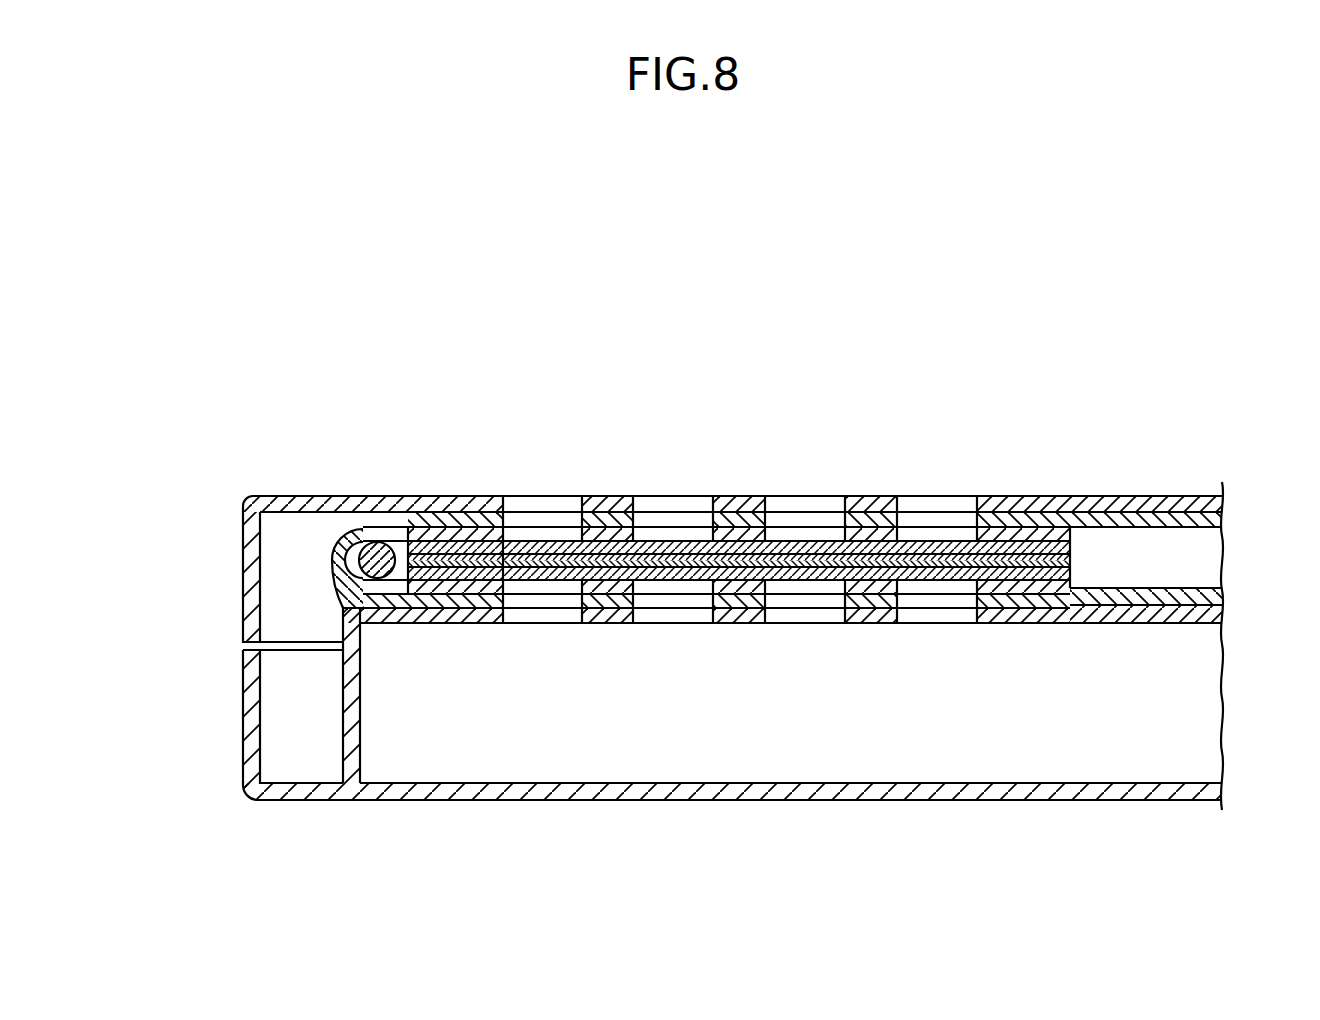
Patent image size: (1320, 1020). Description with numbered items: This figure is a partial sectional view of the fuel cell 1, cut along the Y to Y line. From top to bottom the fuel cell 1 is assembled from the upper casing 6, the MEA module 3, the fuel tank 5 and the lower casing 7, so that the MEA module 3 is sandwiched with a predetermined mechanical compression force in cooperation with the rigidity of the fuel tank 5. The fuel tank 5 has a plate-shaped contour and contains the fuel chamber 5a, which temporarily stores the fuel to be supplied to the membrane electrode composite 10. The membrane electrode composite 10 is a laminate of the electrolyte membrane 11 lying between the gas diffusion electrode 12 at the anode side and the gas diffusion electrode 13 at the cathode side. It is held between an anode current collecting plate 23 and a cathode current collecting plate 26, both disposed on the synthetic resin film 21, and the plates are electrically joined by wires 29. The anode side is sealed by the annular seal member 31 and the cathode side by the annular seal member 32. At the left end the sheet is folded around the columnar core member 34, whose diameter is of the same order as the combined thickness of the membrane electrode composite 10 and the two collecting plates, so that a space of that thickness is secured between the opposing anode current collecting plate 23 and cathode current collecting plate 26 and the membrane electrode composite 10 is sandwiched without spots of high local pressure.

The fuel cell 1 is at (134, 250).
The MEA module 3 is at (1237, 510).
The fuel tank 5 is at (1237, 780).
The fuel chamber 5a is at (733, 718).
The upper casing 6 is at (1200, 502).
The lower casing 7 is at (1000, 795).
The membrane electrode composite 10 is at (547, 435).
The electrolyte membrane 11 is at (572, 545).
The gas diffusion electrode 12 is at (645, 558).
The gas diffusion electrode 13 is at (688, 572).
The film 21 is at (340, 562).
The anode current collecting plate 23 is at (445, 590).
The cathode current collecting plate 26 is at (447, 532).
The wires 29 is at (338, 528).
The annular seal member 31 is at (1070, 568).
The annular seal member 32 is at (1070, 538).
The core member 34 is at (374, 553).